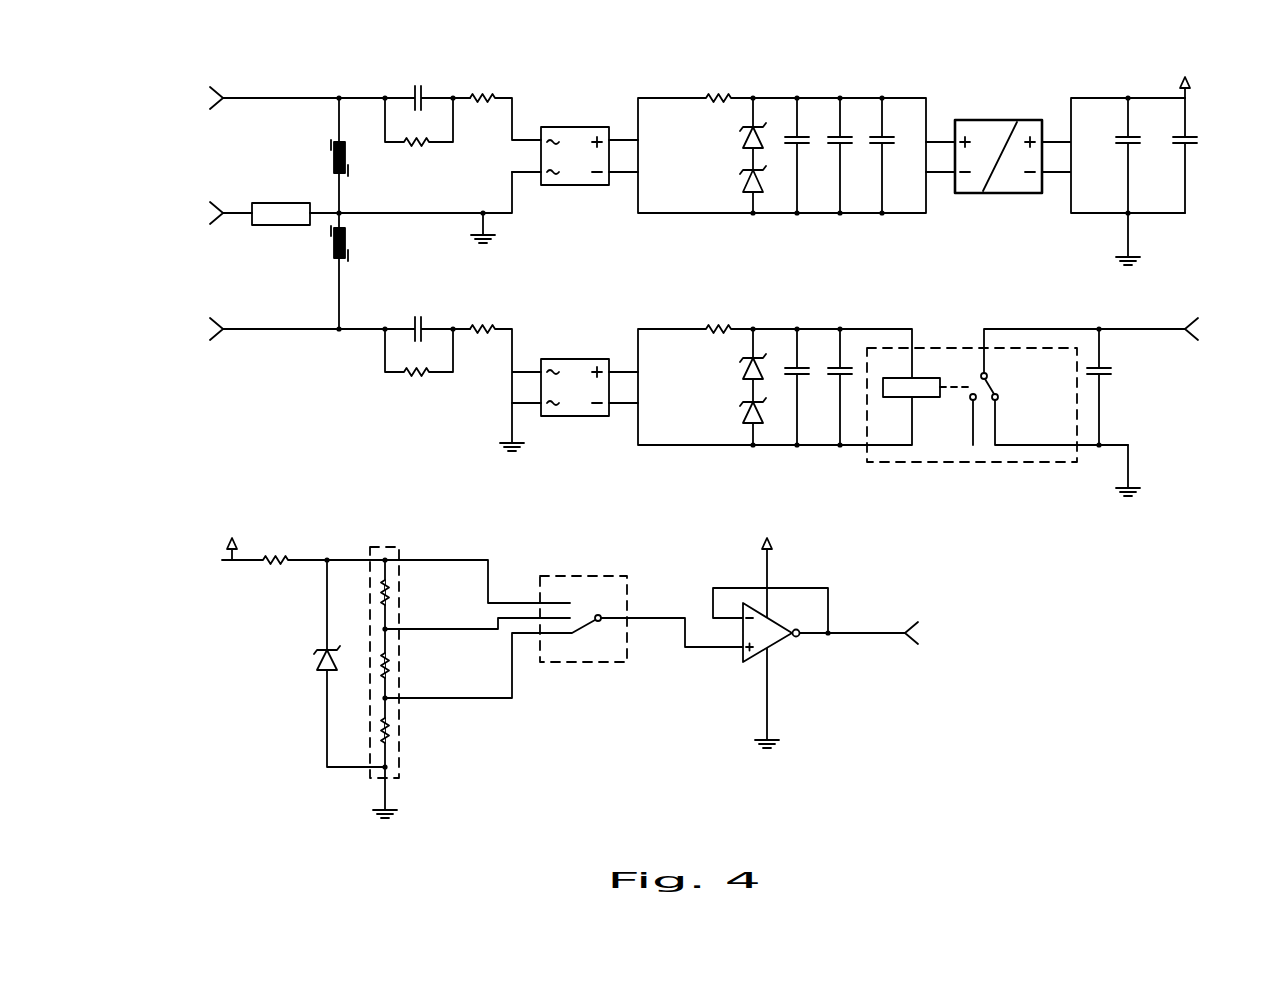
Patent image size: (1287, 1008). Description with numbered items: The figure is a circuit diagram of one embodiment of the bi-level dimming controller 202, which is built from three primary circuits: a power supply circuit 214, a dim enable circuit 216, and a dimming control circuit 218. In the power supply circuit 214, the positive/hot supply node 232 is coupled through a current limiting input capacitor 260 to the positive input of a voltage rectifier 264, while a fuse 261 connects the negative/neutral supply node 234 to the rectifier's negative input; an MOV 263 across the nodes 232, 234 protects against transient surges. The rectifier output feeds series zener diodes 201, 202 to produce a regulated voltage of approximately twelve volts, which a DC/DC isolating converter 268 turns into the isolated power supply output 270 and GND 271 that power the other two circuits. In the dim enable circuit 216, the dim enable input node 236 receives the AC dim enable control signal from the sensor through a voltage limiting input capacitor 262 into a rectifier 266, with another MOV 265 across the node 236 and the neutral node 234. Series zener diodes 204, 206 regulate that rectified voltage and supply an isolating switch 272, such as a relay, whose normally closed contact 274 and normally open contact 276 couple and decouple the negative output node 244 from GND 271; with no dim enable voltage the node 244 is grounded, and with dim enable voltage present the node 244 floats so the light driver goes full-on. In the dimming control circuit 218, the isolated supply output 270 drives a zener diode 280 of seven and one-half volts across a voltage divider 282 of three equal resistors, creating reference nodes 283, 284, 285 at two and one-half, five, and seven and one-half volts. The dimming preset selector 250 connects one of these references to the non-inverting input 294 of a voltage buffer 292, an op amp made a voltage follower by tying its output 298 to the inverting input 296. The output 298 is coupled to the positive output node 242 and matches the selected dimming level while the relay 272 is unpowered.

The positive/hot supply node 232 is at (230, 96).
The negative/neutral supply node 234 is at (230, 211).
The dim enable input node 236 is at (230, 327).
The fuse 261 is at (282, 228).
The MOV 263 is at (330, 157).
The MOV 265 is at (345, 232).
The current limiting input capacitor 260 is at (418, 85).
The voltage rectifier 264 is at (575, 127).
The voltage limiting input capacitor 262 is at (418, 316).
The rectifier 266 is at (575, 359).
The zener diode 202 is at (745, 184).
The zener diode 201 is at (745, 140).
The power supply circuit 214 is at (776, 72).
The DC/DC isolating converter 268 is at (995, 120).
The power supply output 270 is at (1185, 77).
The GND 271 is at (1133, 232).
The dim enable circuit 216 is at (708, 272).
The zener diode 204 is at (745, 372).
The zener diode 206 is at (745, 416).
The isolating switch 272 is at (995, 465).
The normally closed contact 274 is at (1000, 392).
The normally open contact 276 is at (973, 338).
The negative output node 244 is at (1145, 332).
The dimming control circuit 218 is at (710, 500).
The zener diode 280 is at (315, 668).
The voltage divider 282 is at (400, 755).
The node 283 is at (500, 705).
The node 284 is at (498, 640).
The node 285 is at (487, 568).
The dimming preset selector 250 is at (603, 663).
The non-inverting input 294 is at (720, 650).
The inverting input 296 is at (722, 590).
The voltage buffer 292 is at (750, 660).
The output 298 is at (800, 638).
The positive output node 242 is at (897, 627).